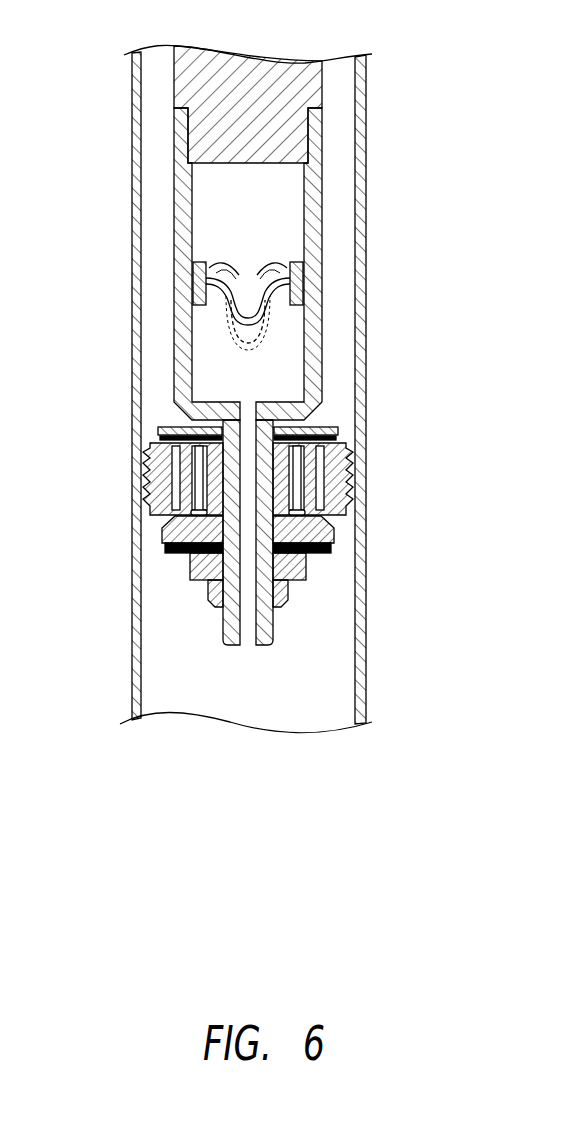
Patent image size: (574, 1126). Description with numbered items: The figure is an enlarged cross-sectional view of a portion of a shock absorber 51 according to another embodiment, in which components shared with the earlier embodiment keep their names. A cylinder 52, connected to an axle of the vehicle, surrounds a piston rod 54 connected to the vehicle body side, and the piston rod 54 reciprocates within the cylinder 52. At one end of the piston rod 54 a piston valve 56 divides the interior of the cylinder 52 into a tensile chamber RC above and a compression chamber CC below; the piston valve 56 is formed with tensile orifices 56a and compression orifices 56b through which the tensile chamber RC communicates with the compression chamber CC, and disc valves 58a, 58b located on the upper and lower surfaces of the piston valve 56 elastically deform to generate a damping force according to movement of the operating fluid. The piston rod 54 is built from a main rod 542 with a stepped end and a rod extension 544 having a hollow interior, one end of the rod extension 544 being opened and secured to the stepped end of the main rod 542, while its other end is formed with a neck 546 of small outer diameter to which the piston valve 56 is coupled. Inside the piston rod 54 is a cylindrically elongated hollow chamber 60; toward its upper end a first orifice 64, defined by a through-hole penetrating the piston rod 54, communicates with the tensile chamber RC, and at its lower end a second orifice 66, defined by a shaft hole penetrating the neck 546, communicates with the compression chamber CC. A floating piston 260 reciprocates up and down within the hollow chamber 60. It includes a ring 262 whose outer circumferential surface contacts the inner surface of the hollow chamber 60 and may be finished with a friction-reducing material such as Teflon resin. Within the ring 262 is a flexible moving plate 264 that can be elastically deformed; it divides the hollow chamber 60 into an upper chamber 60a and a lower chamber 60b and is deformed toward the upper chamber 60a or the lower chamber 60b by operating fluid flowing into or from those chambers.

The shock absorber 51 is at (394, 76).
The cylinder 52 is at (366, 120).
The piston rod 54 is at (340, 206).
The piston valve 56 is at (350, 447).
The tensile orifices 56a is at (335, 500).
The compression orifices 56b is at (330, 483).
The disc valve 58a is at (320, 562).
The disc valve 58b is at (328, 430).
The hollow chamber 60 is at (56, 242).
The upper chamber 60a is at (212, 253).
The lower chamber 60b is at (212, 347).
The first orifice 64 is at (318, 167).
The second orifice 66 is at (273, 632).
The floating piston 260 is at (289, 256).
The ring 262 is at (286, 292).
The flexible moving plate 264 is at (258, 328).
The main rod 542 is at (175, 73).
The rod extension 544 is at (175, 178).
The neck 546 is at (133, 565).
The tensile chamber RC is at (156, 140).
The compression chamber CC is at (155, 672).